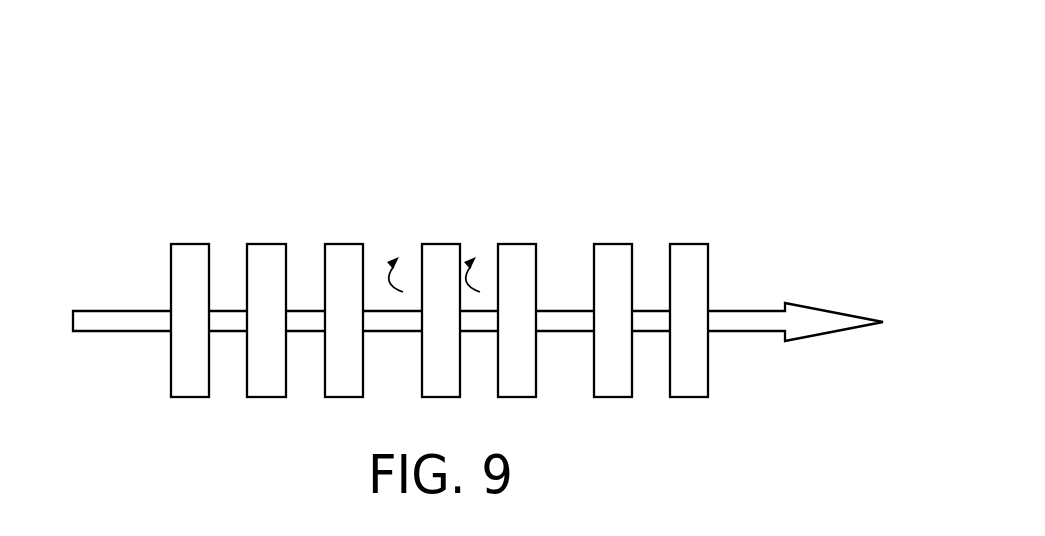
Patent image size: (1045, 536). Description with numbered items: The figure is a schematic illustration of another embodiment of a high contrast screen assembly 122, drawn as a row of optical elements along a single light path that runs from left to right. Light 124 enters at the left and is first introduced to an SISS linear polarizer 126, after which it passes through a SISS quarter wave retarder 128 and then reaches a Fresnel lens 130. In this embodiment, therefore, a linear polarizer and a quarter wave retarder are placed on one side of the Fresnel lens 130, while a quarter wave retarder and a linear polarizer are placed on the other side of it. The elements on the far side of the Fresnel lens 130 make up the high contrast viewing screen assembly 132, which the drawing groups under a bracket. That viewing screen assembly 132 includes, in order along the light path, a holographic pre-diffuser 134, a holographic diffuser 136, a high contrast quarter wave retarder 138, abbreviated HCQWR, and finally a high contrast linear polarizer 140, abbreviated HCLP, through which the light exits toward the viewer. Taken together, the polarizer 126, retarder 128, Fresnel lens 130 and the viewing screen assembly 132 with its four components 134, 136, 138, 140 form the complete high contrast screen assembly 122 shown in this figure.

The high contrast screen assembly 122 is at (478, 207).
The light 124 is at (103, 318).
The SISS linear polarizer 126 is at (188, 250).
The SISS quarter wave retarder 128 is at (267, 250).
The Fresnel lens 130 is at (344, 250).
The high contrast viewing screen assembly 132 is at (569, 207).
The holographic pre-diffuser 134 is at (438, 253).
The holographic diffuser 136 is at (515, 253).
The high contrast quarter wave retarder 138 is at (620, 252).
The high contrast linear polarizer 140 is at (688, 252).